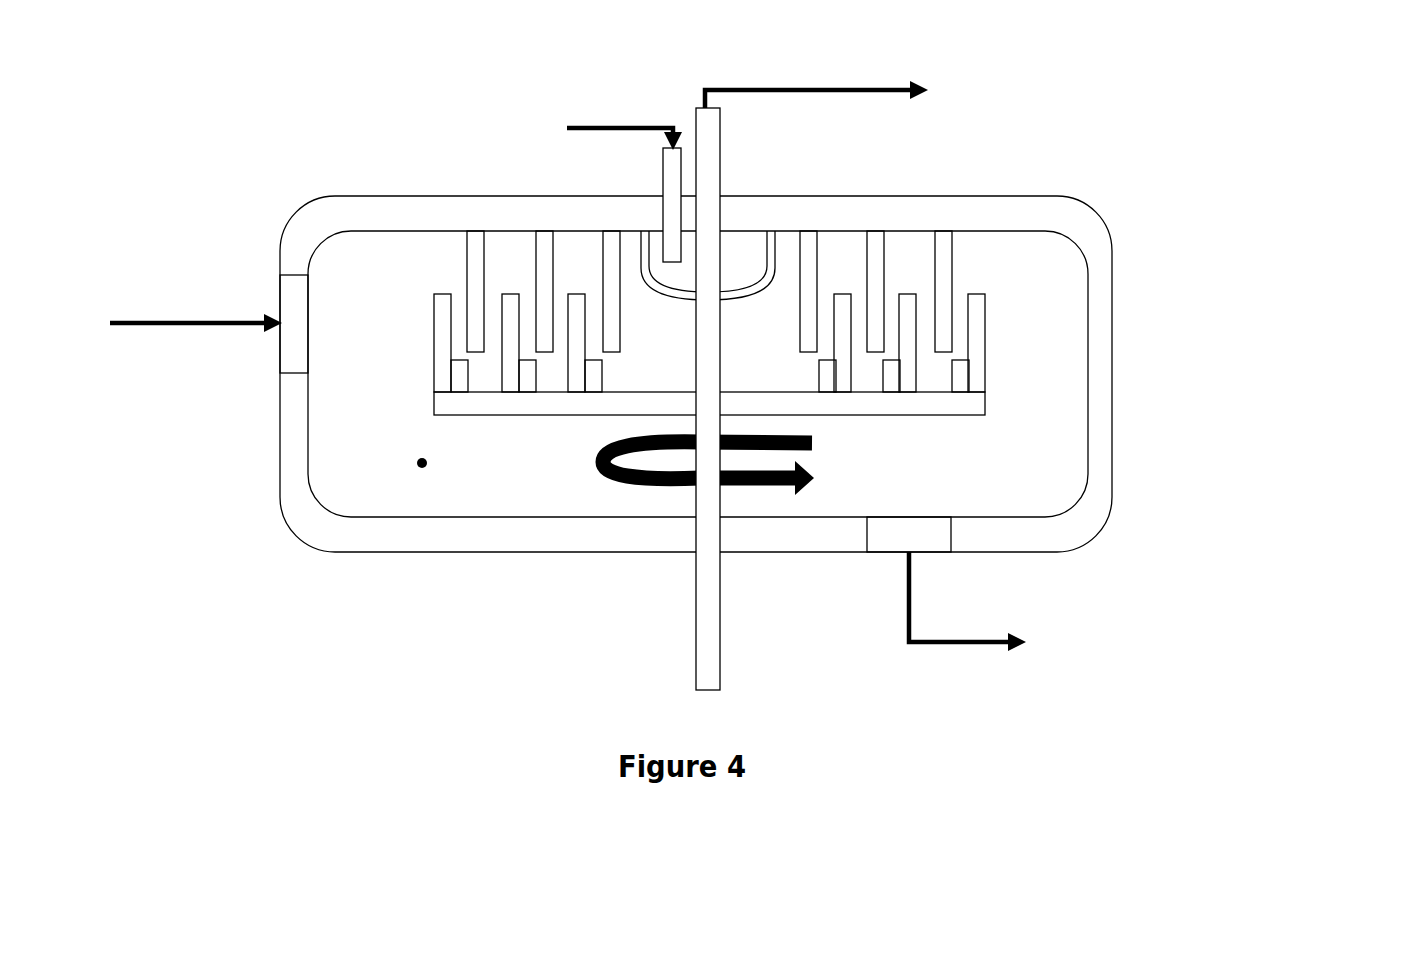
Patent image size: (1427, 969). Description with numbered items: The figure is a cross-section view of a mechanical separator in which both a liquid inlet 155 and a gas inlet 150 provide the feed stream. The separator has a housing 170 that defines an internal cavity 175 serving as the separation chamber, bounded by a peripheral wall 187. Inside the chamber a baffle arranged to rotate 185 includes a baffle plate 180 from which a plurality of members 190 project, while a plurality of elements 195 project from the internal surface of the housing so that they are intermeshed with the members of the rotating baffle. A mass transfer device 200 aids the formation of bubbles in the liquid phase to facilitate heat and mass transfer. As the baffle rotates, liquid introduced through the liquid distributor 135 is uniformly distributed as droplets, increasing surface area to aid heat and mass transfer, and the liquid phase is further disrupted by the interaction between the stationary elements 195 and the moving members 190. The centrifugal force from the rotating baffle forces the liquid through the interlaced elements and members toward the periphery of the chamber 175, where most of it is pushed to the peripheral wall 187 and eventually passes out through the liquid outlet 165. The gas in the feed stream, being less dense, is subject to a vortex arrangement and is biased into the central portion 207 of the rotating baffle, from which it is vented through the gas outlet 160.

The liquid distributor 135 is at (776, 240).
The gas inlet 150 is at (191, 359).
The liquid inlet 155 is at (545, 172).
The gas outlet 160 is at (929, 90).
The liquid outlet 165 is at (1081, 608).
The housing 170 is at (279, 259).
The internal cavity 175 is at (418, 467).
The baffle plate 180 is at (986, 416).
The baffle arranged to rotate 185 is at (745, 468).
The peripheral wall 187 is at (1076, 501).
The members 190 is at (432, 343).
The elements 195 is at (961, 272).
The mass transfer device 200 is at (591, 393).
The central portion 207 is at (704, 376).